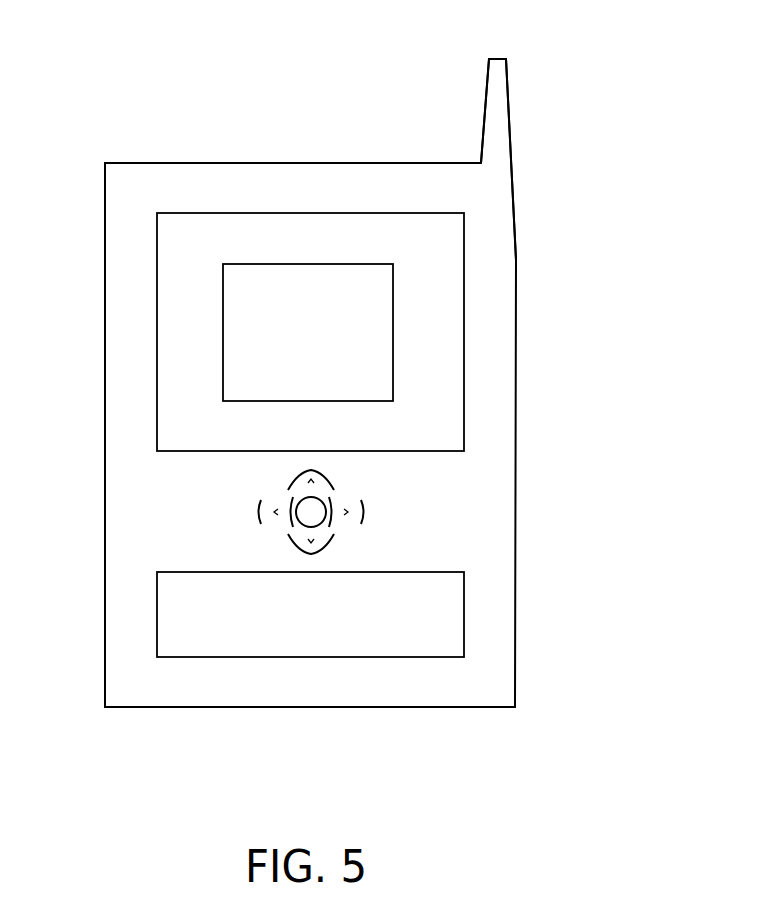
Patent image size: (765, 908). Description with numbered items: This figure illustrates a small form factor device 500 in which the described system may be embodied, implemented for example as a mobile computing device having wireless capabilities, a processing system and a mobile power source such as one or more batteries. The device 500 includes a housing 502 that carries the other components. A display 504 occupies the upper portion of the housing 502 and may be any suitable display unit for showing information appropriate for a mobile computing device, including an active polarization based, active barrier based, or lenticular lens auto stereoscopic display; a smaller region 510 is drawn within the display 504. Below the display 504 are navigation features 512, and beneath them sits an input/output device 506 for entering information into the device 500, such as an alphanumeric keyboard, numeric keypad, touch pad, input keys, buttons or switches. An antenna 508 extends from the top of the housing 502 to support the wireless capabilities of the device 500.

The small form factor device 500 is at (122, 76).
The housing 502 is at (515, 434).
The display 504 is at (464, 231).
The input/output (I/O) device 506 is at (464, 604).
The antenna 508 is at (485, 105).
The display window / content region 510 is at (393, 350).
The navigation features 512 is at (375, 503).